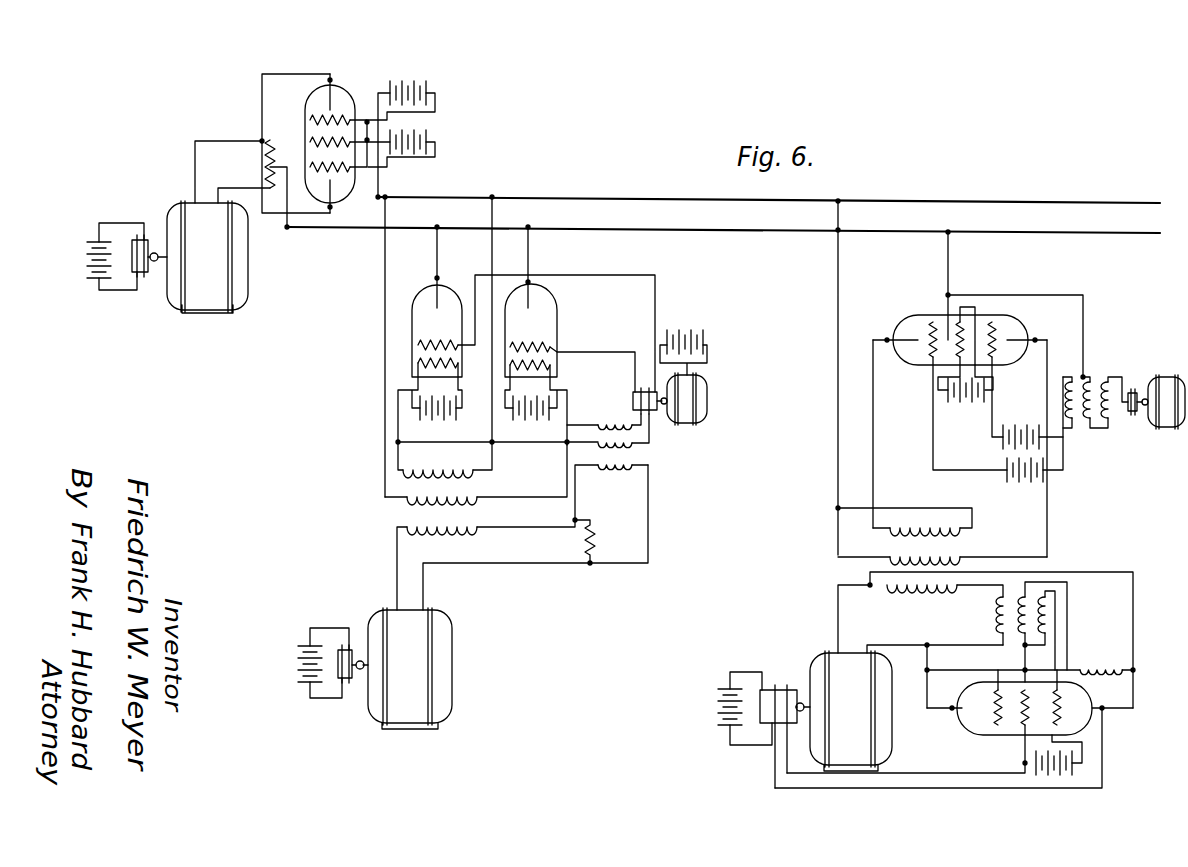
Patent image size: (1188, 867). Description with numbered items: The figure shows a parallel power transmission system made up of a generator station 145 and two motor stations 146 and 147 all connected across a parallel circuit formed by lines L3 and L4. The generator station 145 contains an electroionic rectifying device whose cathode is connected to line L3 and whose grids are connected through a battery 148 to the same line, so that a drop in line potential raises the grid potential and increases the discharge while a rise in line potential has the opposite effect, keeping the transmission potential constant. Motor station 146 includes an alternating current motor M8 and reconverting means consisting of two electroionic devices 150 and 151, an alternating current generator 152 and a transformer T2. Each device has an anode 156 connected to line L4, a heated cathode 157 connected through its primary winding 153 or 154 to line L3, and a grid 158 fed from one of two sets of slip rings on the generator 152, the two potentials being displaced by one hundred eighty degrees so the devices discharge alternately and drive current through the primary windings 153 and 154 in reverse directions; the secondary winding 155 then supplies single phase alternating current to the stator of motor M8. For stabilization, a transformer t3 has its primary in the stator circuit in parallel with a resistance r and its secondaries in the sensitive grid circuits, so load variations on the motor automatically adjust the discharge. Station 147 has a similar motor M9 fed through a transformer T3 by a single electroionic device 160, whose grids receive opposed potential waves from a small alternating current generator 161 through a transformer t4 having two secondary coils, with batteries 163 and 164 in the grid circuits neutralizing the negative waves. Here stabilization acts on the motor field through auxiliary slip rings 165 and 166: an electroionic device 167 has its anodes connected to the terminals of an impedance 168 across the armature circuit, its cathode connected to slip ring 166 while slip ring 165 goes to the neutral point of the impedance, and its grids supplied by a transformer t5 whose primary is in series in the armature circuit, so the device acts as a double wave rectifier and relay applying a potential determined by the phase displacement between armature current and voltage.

The generator station 145 is at (196, 257).
The motor station 146 is at (544, 402).
The motor station 147 is at (1010, 382).
The battery 148 is at (428, 94).
The electroionic device 150 is at (420, 290).
The electroionic device 151 is at (548, 292).
The alternating current generator 152 is at (705, 389).
The primary winding 153 is at (454, 462).
The primary winding 154 is at (477, 498).
The secondary winding 155 is at (475, 540).
The anode 156 is at (438, 290).
The heated cathode 157 is at (418, 364).
The grid 158 is at (418, 341).
The electroionic device 160 is at (915, 308).
The alternating current generator 161 is at (1174, 377).
The battery 163 is at (1030, 420).
The battery 164 is at (1030, 481).
The auxiliary slip ring 165 is at (775, 685).
The auxiliary slip ring 166 is at (788, 685).
The electroionic device 167 is at (1000, 738).
The impedance 168 is at (1110, 665).
The line L3 is at (464, 198).
The line L4 is at (360, 230).
The transformer T2 is at (404, 511).
The transformer T3 is at (952, 535).
The transformer t3 is at (638, 447).
The transformer t4 is at (1090, 377).
The transformer t5 is at (1000, 612).
The resistance r is at (595, 541).
The alternating current motor M8 is at (375, 668).
The motor M9 is at (844, 711).